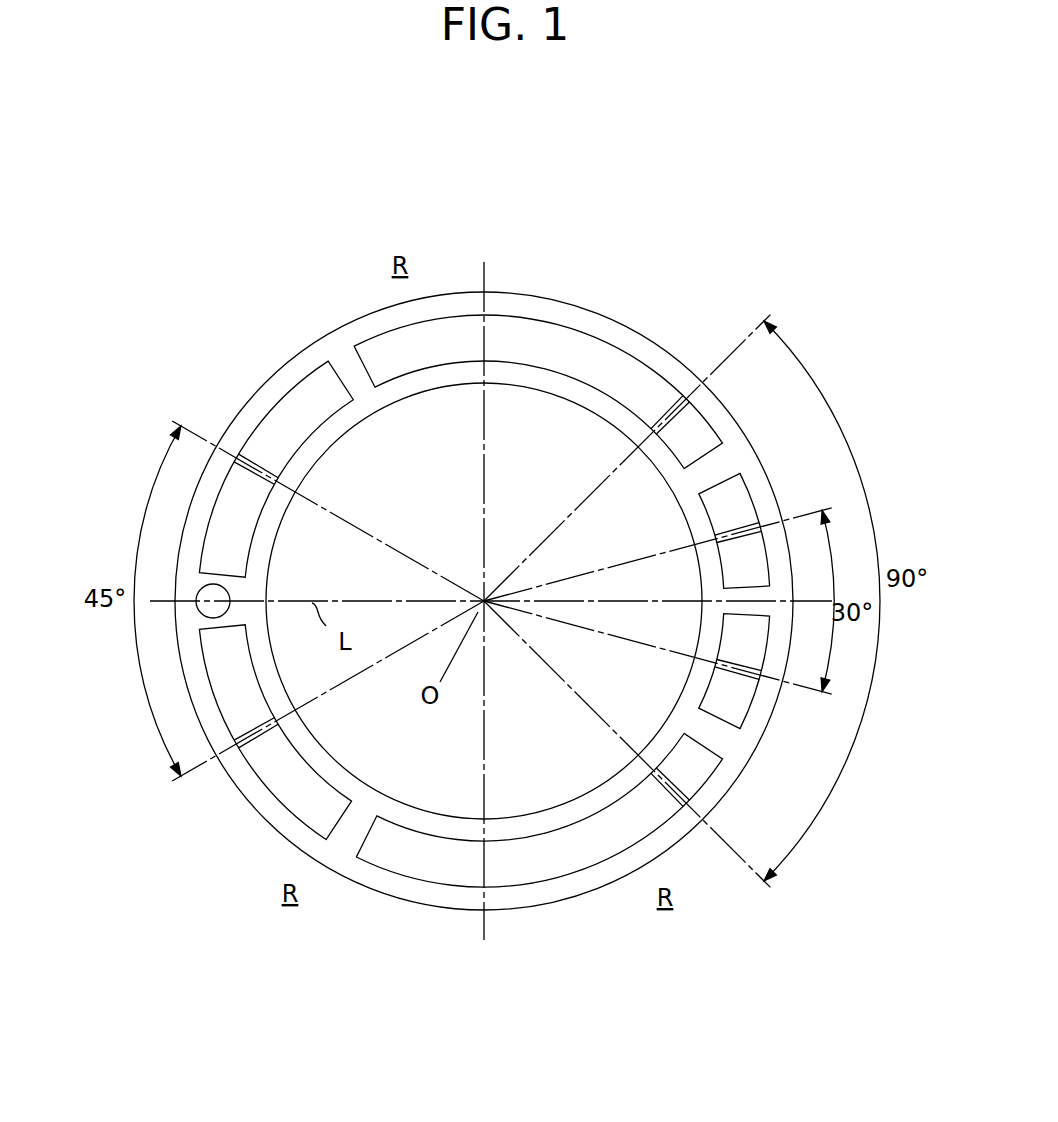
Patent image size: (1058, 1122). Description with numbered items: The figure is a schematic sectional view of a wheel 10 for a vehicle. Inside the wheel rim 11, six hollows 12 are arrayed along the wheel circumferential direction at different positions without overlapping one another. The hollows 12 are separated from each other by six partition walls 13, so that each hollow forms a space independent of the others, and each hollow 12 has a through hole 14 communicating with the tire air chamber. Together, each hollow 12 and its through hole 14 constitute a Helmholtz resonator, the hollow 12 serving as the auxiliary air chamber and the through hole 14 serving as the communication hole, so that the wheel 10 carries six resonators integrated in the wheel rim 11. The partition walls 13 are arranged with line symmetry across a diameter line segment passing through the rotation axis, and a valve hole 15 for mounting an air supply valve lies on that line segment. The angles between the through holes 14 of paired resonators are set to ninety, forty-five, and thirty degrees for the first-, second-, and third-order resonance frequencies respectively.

The wheel for the vehicle 10 is at (103, 278).
The wheel rim 11 is at (540, 293).
The hollow 12 is at (555, 1005).
The partition wall 13 is at (347, 367).
The through hole 14 is at (230, 438).
The valve hole 15 is at (197, 598).